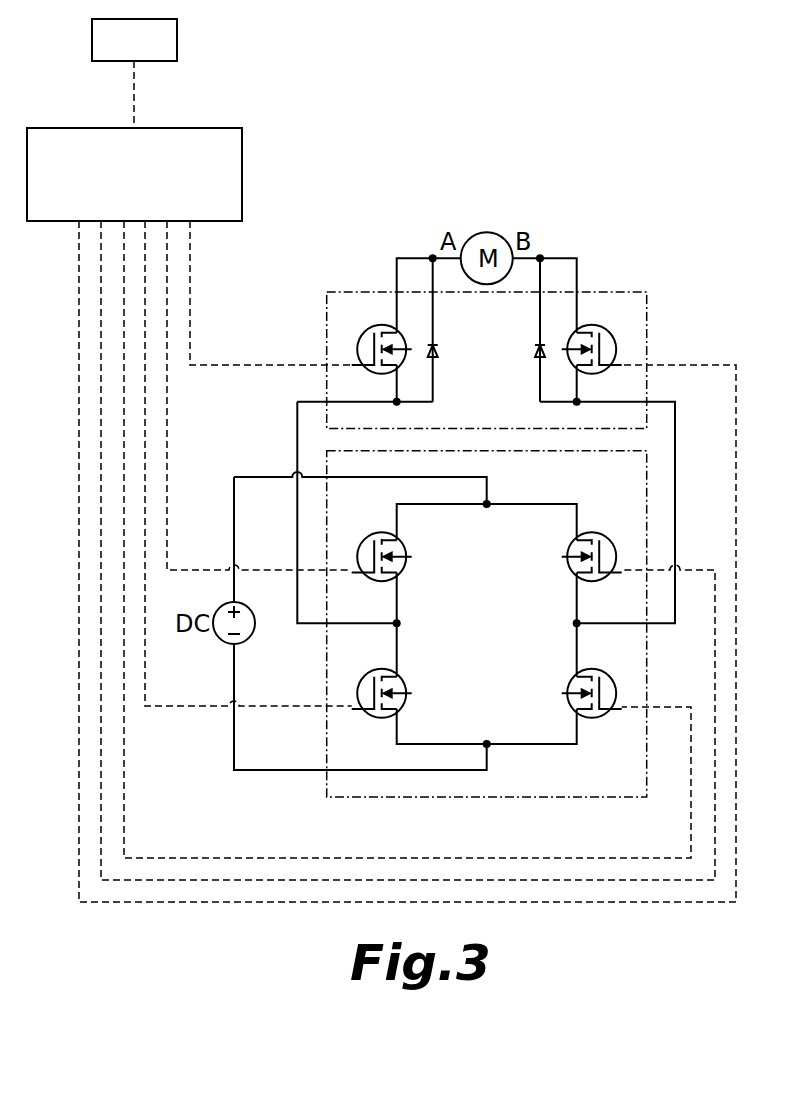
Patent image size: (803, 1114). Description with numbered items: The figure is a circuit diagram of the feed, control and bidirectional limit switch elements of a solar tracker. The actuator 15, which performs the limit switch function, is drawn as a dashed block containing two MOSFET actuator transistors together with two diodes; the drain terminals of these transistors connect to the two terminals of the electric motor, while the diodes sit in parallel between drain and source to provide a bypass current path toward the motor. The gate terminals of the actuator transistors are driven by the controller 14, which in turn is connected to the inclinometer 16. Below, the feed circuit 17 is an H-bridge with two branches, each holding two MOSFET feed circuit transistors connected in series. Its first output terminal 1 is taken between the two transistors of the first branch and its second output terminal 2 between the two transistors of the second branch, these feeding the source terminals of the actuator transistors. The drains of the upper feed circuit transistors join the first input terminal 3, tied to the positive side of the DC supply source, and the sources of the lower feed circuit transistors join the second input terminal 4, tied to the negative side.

The controller 14 is at (134, 174).
The actuator 15 is at (648, 330).
The inclinometer 16 is at (134, 40).
The feed circuit 17 is at (487, 651).
The first output terminal 1 is at (388, 611).
The second output terminal 2 is at (586, 611).
The first input terminal 3 is at (497, 491).
The second input terminal 4 is at (496, 757).